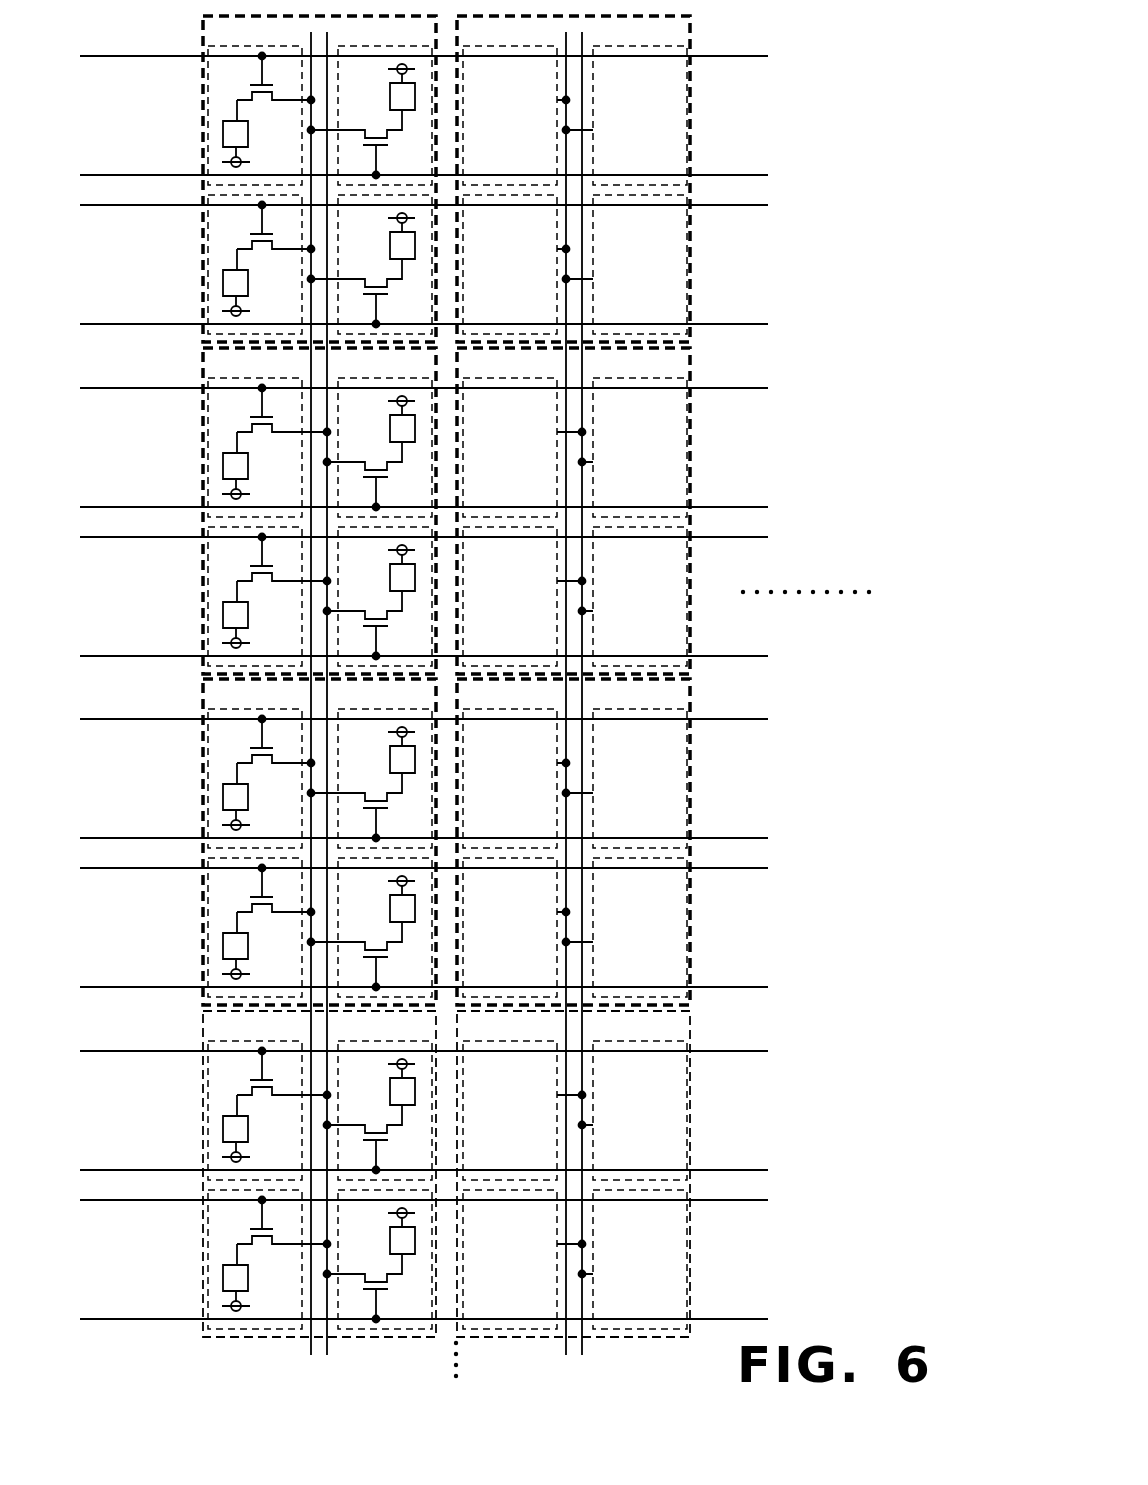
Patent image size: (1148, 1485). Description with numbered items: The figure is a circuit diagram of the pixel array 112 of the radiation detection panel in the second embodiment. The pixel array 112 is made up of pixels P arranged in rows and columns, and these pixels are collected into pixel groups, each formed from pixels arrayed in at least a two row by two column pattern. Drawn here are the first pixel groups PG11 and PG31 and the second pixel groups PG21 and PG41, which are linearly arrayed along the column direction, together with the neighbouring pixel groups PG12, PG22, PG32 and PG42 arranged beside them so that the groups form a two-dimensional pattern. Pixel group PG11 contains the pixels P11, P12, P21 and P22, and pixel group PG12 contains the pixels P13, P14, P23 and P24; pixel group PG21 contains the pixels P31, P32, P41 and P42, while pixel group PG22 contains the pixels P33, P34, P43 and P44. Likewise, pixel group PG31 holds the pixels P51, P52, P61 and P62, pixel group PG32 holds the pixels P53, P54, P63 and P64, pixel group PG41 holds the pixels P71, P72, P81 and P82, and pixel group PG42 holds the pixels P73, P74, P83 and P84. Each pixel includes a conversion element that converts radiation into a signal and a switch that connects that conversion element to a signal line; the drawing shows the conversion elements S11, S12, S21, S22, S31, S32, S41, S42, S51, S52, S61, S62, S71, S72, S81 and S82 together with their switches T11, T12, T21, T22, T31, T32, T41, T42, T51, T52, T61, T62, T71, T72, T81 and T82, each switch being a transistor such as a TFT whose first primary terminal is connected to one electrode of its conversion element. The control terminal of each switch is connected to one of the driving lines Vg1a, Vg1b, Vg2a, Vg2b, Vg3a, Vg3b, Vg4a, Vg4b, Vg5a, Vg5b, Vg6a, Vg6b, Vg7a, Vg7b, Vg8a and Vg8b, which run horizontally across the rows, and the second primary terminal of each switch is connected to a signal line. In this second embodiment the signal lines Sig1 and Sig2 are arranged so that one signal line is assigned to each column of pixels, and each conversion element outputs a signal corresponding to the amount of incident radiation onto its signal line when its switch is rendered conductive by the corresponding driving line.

The pixel array 112 is at (792, 125).
The pixel group PG11 is at (319, 179).
The pixel group PG12 is at (573, 179).
The pixel group PG21 is at (319, 511).
The pixel group PG22 is at (573, 511).
The pixel group PG31 is at (319, 842).
The pixel group PG32 is at (573, 842).
The pixel group PG41 is at (319, 1174).
The pixel group PG42 is at (573, 1174).
The pixel P11 is at (255, 115).
The pixel P12 is at (385, 115).
The pixel P13 is at (528, 115).
The pixel P14 is at (640, 115).
The pixel P21 is at (255, 264).
The pixel P22 is at (385, 264).
The pixel P23 is at (528, 264).
The pixel P24 is at (640, 264).
The pixel P31 is at (255, 447).
The pixel P32 is at (385, 447).
The pixel P33 is at (528, 447).
The pixel P34 is at (640, 447).
The pixel P41 is at (255, 596).
The pixel P42 is at (385, 596).
The pixel P43 is at (528, 596).
The pixel P44 is at (640, 596).
The pixel P51 is at (255, 778).
The pixel P52 is at (385, 778).
The pixel P53 is at (528, 778).
The pixel P54 is at (640, 778).
The pixel P61 is at (255, 927).
The pixel P62 is at (385, 927).
The pixel P63 is at (528, 927).
The pixel P64 is at (640, 927).
The pixel P71 is at (255, 1110).
The pixel P72 is at (385, 1110).
The pixel P73 is at (528, 1110).
The pixel P74 is at (640, 1110).
The pixel P81 is at (255, 1259).
The pixel P82 is at (385, 1259).
The pixel P83 is at (528, 1259).
The pixel P84 is at (640, 1259).
The switch T11 is at (260, 39).
The switch T12 is at (378, 77).
The switch T21 is at (276, 246).
The switch T22 is at (355, 284).
The switch T31 is at (284, 429).
The switch T32 is at (363, 467).
The switch T41 is at (284, 578).
The switch T42 is at (363, 616).
The switch T51 is at (276, 760).
The switch T52 is at (355, 798).
The switch T61 is at (276, 909).
The switch T62 is at (355, 947).
The switch T71 is at (284, 1092).
The switch T72 is at (363, 1130).
The switch T81 is at (284, 1241).
The switch T82 is at (363, 1279).
The conversion element S11 is at (250, 81).
The conversion element S12 is at (381, 84).
The conversion element S21 is at (262, 286).
The conversion element S22 is at (381, 233).
The conversion element S31 is at (262, 469).
The conversion element S32 is at (381, 416).
The conversion element S41 is at (262, 618).
The conversion element S42 is at (381, 565).
The conversion element S51 is at (262, 800).
The conversion element S52 is at (381, 747).
The conversion element S61 is at (262, 949).
The conversion element S62 is at (381, 896).
The conversion element S71 is at (262, 1132).
The conversion element S72 is at (381, 1079).
The conversion element S81 is at (262, 1281).
The conversion element S82 is at (381, 1228).
The driving line Vg1a is at (424, 43).
The driving line Vg1b is at (424, 162).
The driving line Vg2a is at (424, 192).
The driving line Vg2b is at (424, 311).
The driving line Vg3a is at (424, 375).
The driving line Vg3b is at (424, 494).
The driving line Vg4a is at (424, 524).
The driving line Vg4b is at (424, 643).
The driving line Vg5a is at (424, 706).
The driving line Vg5b is at (424, 825).
The driving line Vg6a is at (424, 855).
The driving line Vg6b is at (424, 974).
The driving line Vg7a is at (424, 1038).
The driving line Vg7b is at (424, 1157).
The driving line Vg8a is at (424, 1187).
The driving line Vg8b is at (424, 1306).
The signal line Sig1 is at (425, 708).
The signal line Sig2 is at (473, 708).